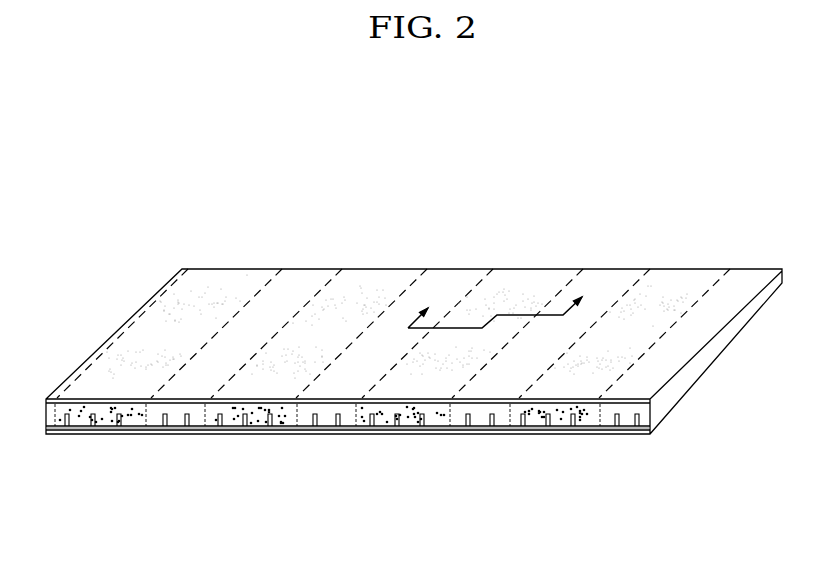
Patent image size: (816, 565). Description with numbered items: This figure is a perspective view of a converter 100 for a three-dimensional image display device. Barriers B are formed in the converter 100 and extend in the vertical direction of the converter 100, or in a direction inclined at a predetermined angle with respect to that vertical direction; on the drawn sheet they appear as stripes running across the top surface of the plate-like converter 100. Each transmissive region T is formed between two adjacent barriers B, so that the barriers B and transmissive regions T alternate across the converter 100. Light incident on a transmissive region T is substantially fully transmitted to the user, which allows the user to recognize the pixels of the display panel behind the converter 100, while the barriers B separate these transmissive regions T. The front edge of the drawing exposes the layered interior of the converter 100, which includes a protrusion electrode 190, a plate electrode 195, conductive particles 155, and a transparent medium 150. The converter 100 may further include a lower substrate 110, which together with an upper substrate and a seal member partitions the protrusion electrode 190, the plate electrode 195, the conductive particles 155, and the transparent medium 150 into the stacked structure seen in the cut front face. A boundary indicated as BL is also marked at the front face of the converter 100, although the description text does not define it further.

The converter 100 is at (414, 348).
The lower substrate 110 is at (643, 435).
The transparent medium 150 is at (468, 425).
The conductive particles 155 is at (379, 425).
The protrusion electrode 190 is at (492, 424).
The plate electrode 195 is at (638, 402).
The boundary line BL is at (602, 420).
The transmissive region T is at (298, 283).
The barrier B is at (523, 287).